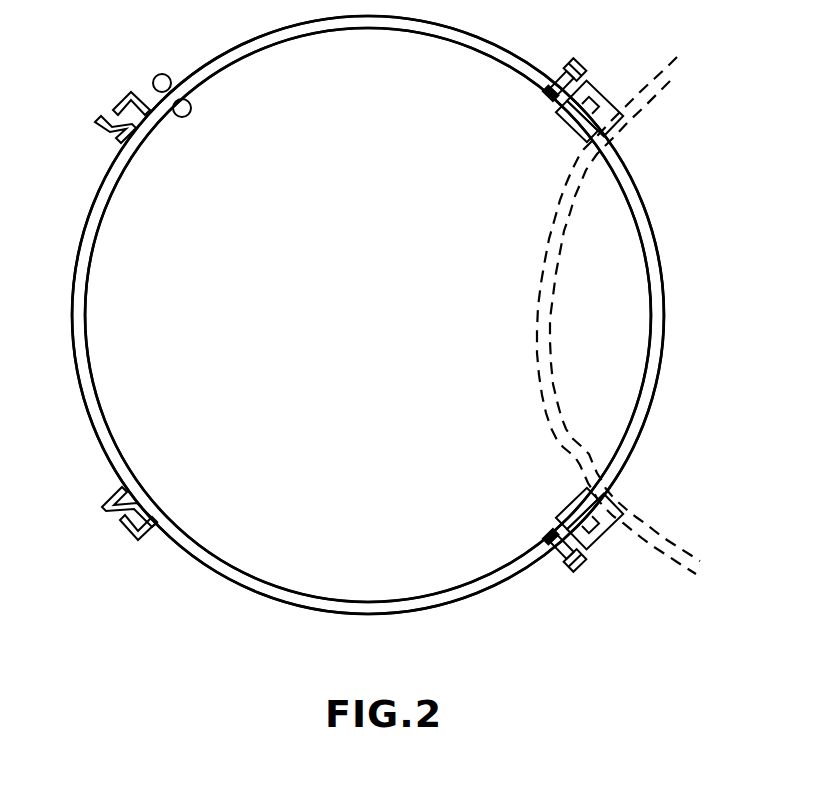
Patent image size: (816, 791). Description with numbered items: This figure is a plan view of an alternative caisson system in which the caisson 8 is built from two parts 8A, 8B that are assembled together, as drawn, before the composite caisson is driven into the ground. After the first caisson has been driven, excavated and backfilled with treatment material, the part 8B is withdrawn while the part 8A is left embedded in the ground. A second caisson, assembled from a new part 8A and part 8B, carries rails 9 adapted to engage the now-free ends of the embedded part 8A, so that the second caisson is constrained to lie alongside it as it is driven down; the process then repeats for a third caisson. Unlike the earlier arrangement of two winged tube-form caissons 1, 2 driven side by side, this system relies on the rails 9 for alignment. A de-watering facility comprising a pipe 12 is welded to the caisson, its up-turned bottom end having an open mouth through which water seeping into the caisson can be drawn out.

The caisson 1 is at (228, 560).
The caisson 2 is at (655, 368).
The caisson 8 is at (384, 347).
The caisson part 8A is at (198, 315).
The caisson part 8B is at (643, 217).
The rails 9 is at (106, 128).
The pipe 12 is at (156, 79).